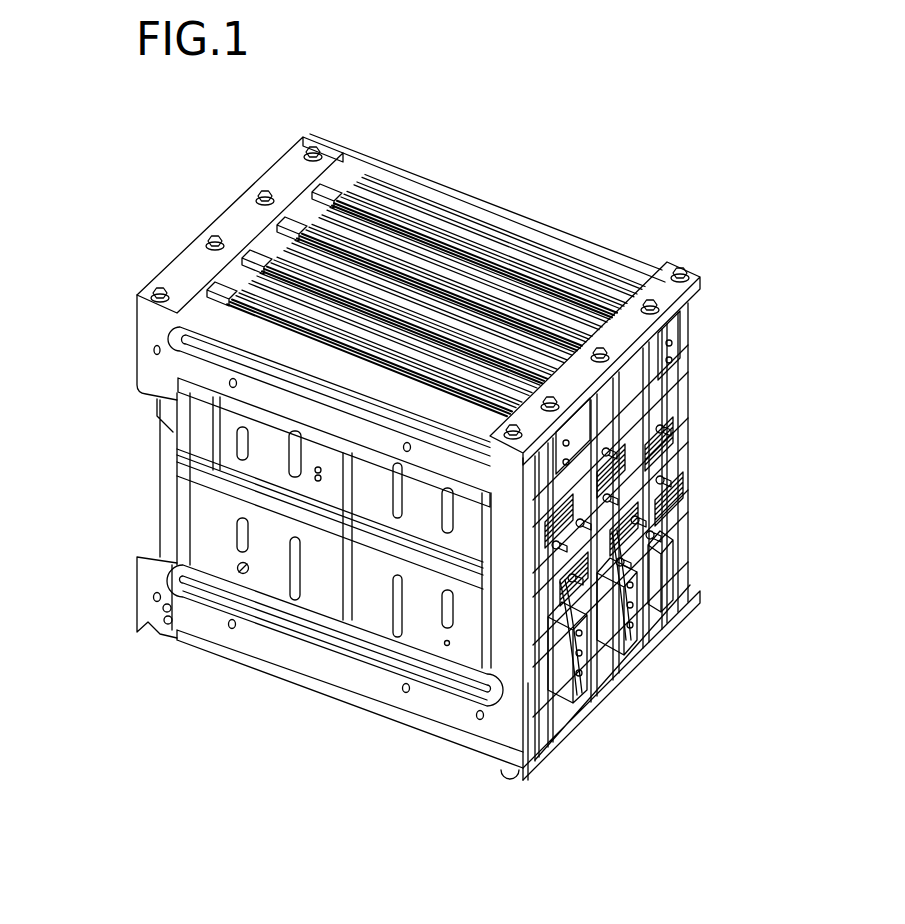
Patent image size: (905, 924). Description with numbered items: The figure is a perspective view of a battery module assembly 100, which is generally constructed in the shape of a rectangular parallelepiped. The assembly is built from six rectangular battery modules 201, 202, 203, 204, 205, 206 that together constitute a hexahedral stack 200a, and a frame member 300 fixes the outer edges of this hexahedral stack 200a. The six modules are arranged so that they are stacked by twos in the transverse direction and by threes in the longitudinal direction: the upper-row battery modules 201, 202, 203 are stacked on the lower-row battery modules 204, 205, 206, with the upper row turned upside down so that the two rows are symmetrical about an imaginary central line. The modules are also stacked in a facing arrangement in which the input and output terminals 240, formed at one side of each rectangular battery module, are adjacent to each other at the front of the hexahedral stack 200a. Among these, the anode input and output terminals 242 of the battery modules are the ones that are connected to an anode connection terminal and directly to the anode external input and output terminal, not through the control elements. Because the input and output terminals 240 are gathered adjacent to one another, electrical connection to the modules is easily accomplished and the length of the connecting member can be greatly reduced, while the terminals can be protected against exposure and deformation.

The battery module assembly 100 is at (117, 190).
The hexahedral stack 200a is at (513, 192).
The frame member 300 is at (150, 345).
The rectangular battery module 201 is at (676, 348).
The rectangular battery module 202 is at (608, 398).
The rectangular battery module 203 is at (565, 452).
The input and output terminals 240 is at (672, 435).
The anode input and output terminals 242 is at (672, 485).
The rectangular battery module 204 is at (666, 567).
The rectangular battery module 205 is at (632, 613).
The rectangular battery module 206 is at (563, 687).